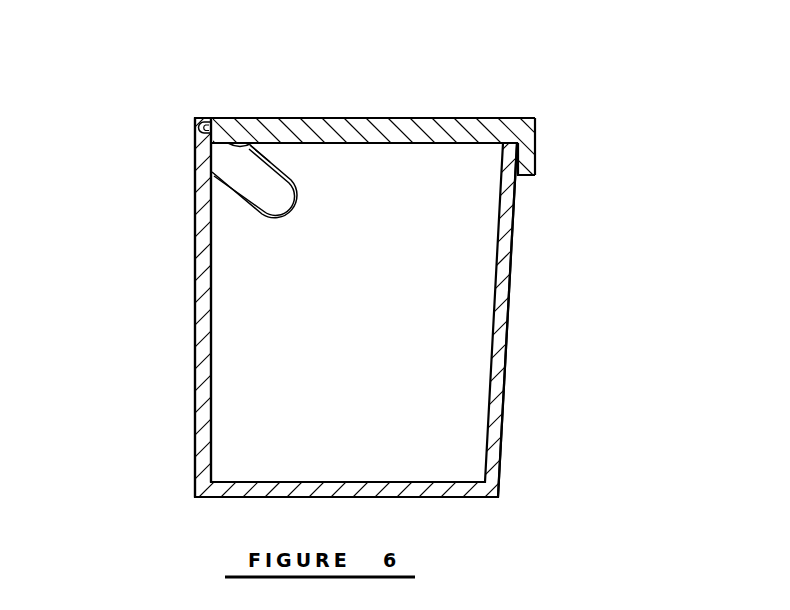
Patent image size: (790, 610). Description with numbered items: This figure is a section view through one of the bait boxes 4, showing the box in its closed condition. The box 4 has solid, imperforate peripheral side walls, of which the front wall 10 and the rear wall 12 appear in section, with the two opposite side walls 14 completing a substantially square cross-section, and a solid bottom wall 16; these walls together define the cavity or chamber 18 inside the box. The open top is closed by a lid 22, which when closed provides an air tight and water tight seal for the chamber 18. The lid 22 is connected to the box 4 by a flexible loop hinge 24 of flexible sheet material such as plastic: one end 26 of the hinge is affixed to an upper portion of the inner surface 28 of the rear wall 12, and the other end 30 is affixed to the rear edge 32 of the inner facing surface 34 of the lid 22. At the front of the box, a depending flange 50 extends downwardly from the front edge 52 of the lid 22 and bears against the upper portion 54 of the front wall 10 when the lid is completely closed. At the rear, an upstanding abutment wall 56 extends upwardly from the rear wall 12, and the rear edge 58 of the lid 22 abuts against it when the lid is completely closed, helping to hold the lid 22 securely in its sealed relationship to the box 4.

The bait box 4 is at (563, 352).
The front wall 10 is at (395, 307).
The rear wall 12 is at (125, 307).
The side walls 14 is at (540, 320).
The bottom wall 16 is at (410, 530).
The cavity or chamber 18 is at (147, 430).
The lid 22 is at (409, 106).
The flexible loop hinge 24 is at (278, 208).
The one end of flexible loop hinge 26 is at (278, 223).
The inner surface of rear wall 28 is at (277, 312).
The other end of flexible loop hinge 30 is at (279, 90).
The rear edge of inner facing surface of lid 32 is at (297, 160).
The inner facing surface of lid 34 is at (364, 171).
The depending flange 50 is at (573, 159).
The front edge of lid 52 is at (582, 141).
The upper portion of front wall 54 is at (451, 189).
The upstanding abutment wall 56 is at (133, 118).
The rear edge of lid 58 is at (142, 87).